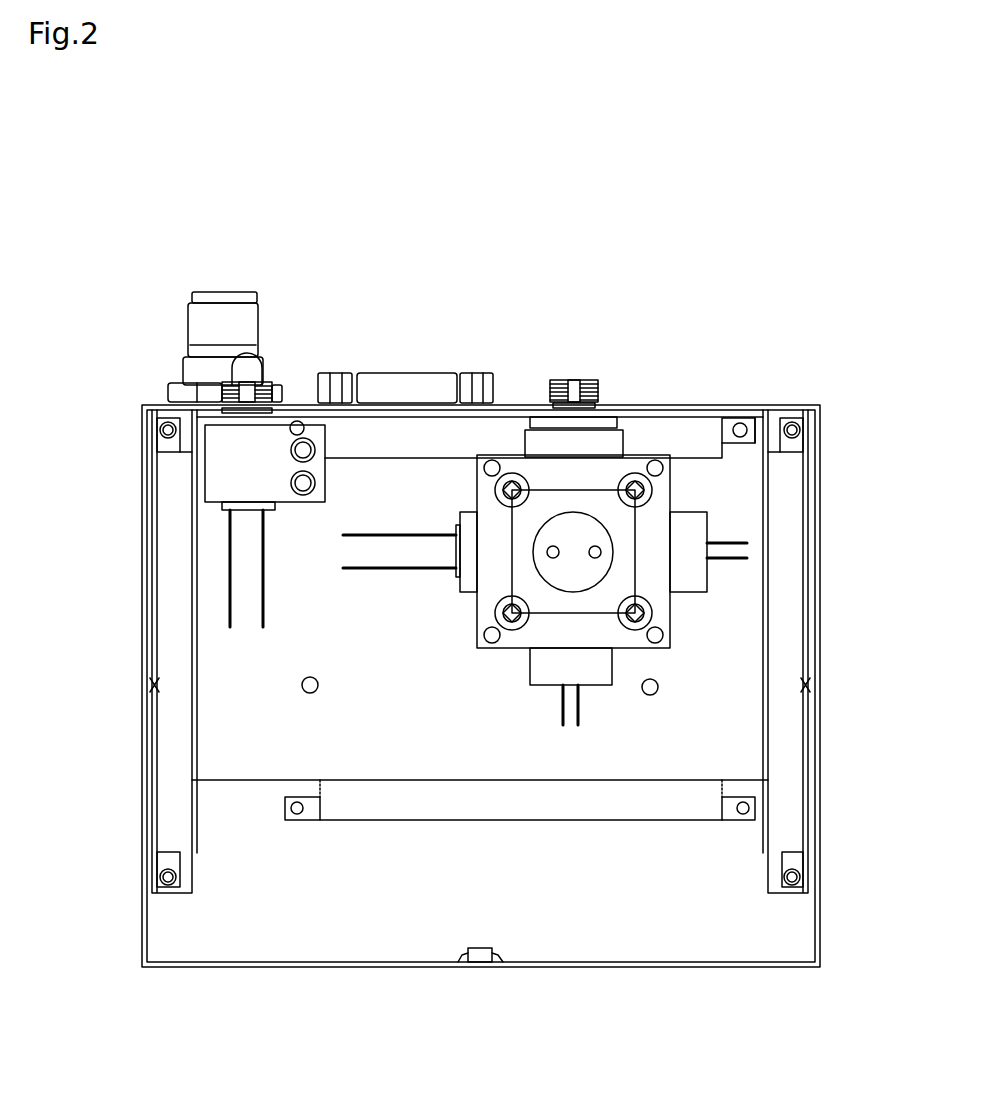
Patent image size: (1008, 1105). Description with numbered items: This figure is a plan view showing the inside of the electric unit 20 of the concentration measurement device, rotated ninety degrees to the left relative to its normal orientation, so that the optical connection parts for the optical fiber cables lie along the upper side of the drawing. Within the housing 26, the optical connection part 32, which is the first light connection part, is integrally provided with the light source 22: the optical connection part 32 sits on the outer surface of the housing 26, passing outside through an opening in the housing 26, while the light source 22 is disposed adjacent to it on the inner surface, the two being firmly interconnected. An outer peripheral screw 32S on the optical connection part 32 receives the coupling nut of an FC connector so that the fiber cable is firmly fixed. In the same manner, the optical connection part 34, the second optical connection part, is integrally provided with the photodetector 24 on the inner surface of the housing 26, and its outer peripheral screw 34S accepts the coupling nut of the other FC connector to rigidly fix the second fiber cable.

The electric unit 20 is at (794, 252).
The light source 22 is at (630, 541).
The photodetector 24 is at (250, 473).
The housing 26 is at (750, 404).
The optical connection part 32 is at (582, 387).
The outer peripheral screw 32S is at (598, 391).
The optical connection part 34 is at (263, 383).
The outer peripheral screw 34S is at (277, 393).